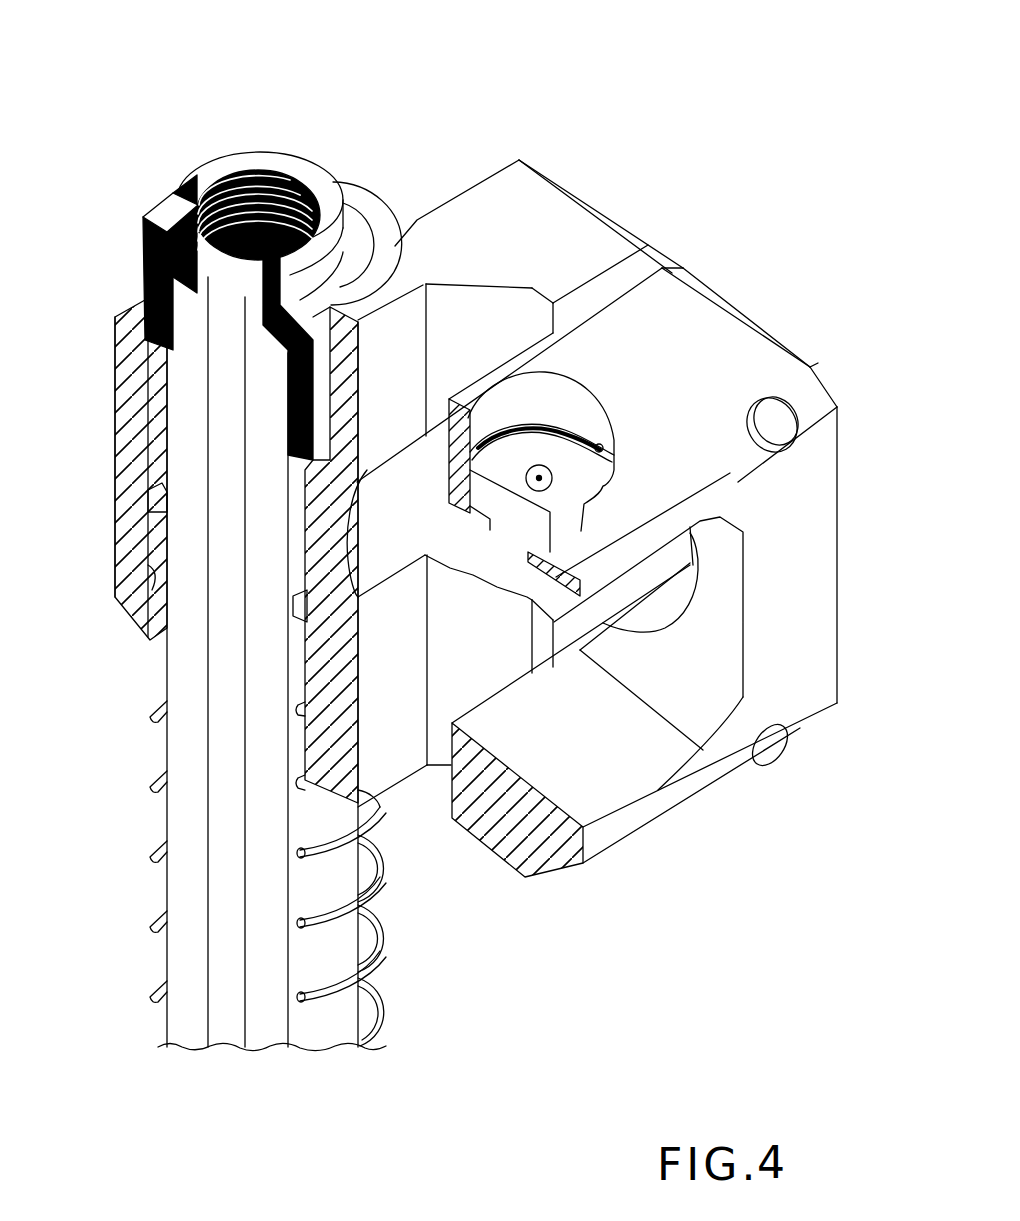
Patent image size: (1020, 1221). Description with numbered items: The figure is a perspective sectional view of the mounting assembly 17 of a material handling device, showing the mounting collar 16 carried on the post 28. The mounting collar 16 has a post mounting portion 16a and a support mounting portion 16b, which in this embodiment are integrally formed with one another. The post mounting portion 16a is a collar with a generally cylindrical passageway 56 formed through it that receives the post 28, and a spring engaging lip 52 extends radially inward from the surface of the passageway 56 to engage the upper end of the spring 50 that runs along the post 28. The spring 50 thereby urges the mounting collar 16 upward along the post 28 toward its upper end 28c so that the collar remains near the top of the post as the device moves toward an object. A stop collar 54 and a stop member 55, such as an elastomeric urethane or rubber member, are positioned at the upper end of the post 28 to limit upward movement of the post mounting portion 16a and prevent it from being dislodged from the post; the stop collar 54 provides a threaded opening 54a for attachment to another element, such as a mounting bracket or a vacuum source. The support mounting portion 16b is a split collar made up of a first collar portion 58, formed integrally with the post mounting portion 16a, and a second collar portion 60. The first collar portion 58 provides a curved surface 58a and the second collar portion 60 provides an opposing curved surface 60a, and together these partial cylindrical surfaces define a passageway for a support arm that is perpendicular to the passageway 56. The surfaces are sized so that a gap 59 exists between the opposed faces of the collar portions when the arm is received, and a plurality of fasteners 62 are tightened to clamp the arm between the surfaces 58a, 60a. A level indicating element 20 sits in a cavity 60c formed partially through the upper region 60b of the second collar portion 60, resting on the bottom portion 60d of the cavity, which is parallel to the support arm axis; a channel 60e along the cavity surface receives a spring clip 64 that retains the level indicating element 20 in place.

The mounting collar 16 is at (426, 124).
The post mounting portion 16a is at (95, 452).
The support mounting portion 16b is at (756, 218).
The mounting assembly 17 is at (623, 956).
The level indicating element 20 is at (517, 525).
The post 28 is at (187, 940).
The upper end of post 28c is at (185, 350).
The spring 50 is at (380, 1001).
The spring engaging lip 52 is at (157, 497).
The stop collar 54 is at (160, 213).
The threaded opening 54a is at (233, 160).
The stop member 55 is at (145, 328).
The cylindrical passageway 56 is at (155, 570).
The first collar portion 58 is at (519, 182).
The curved surface 58a is at (381, 536).
The gap 59 is at (636, 262).
The second collar portion 60 is at (752, 310).
The curved surface 60a is at (671, 613).
The upper region 60b is at (585, 345).
The cavity 60c is at (515, 400).
The bottom portion of cavity 60d is at (473, 527).
The channel 60e is at (468, 461).
The fasteners 62 is at (780, 417).
The spring clip 64 is at (590, 440).